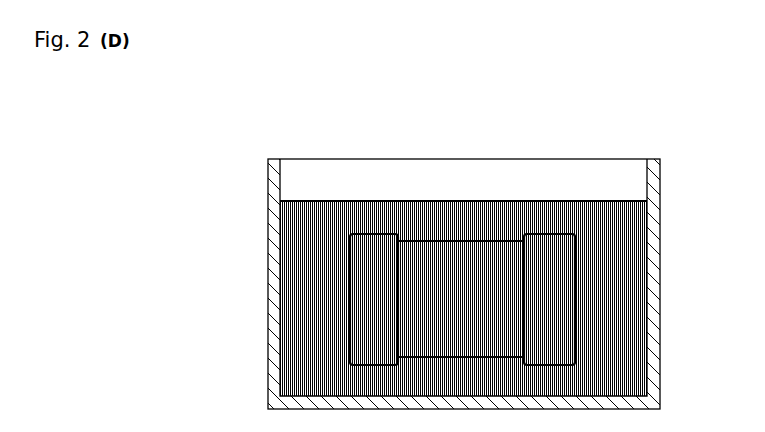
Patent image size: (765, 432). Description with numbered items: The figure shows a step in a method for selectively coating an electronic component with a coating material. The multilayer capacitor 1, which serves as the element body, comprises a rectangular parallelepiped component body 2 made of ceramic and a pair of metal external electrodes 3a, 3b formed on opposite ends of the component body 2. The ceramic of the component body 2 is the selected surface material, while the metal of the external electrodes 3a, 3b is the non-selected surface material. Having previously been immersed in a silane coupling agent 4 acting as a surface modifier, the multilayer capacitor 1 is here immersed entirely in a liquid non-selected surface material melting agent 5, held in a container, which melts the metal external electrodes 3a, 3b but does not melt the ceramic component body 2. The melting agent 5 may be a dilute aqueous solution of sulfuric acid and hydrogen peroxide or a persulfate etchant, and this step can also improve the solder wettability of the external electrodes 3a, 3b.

The multilayer capacitor 1 is at (417, 224).
The component body 2 is at (457, 202).
The external electrode 3a is at (372, 303).
The external electrode 3b is at (548, 295).
The silane coupling agent 4 is at (475, 292).
The non-selected surface material melting agent 5 is at (318, 228).